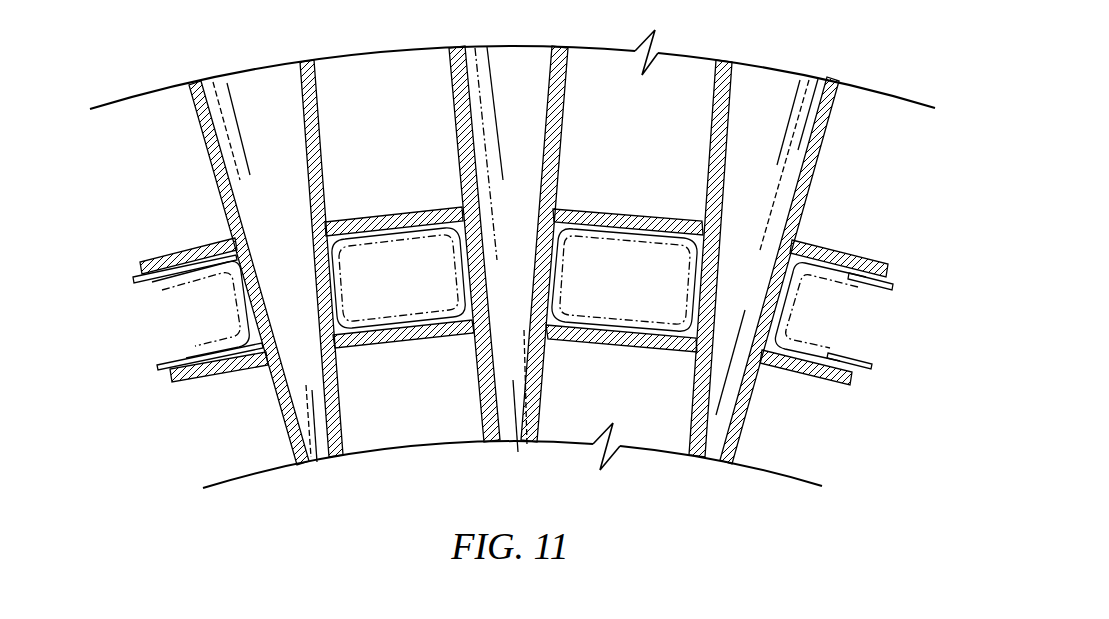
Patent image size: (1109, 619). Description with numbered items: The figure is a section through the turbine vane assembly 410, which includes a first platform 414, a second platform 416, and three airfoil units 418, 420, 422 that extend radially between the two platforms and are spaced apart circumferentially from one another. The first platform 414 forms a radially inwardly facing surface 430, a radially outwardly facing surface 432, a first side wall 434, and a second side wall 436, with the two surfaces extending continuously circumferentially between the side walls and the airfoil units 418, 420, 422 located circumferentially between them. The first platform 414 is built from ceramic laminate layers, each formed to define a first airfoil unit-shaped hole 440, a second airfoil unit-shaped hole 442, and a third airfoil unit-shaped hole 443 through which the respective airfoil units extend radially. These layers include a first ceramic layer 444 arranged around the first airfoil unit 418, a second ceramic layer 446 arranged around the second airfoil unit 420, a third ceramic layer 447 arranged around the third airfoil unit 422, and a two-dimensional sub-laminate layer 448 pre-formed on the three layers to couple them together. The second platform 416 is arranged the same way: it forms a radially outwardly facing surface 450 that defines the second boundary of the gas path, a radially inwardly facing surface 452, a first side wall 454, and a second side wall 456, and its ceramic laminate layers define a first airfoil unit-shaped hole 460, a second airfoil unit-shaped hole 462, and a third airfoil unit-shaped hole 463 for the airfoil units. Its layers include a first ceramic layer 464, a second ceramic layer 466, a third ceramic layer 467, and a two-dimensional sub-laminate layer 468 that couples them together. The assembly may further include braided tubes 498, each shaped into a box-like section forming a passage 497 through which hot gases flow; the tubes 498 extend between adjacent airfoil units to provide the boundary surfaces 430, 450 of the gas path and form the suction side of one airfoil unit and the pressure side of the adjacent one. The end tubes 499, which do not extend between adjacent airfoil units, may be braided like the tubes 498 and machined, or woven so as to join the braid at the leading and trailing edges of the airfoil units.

The turbine vane assembly 410 is at (893, 62).
The first platform 414 is at (890, 185).
The second platform 416 is at (824, 422).
The first airfoil unit 418 is at (791, 290).
The second airfoil unit 420 is at (563, 263).
The third airfoil unit 422 is at (233, 326).
The radially inwardly facing surface 430 is at (863, 281).
The radially outwardly facing surface 432 is at (878, 264).
The first side wall 434 is at (890, 272).
The second side wall 436 is at (136, 275).
The first airfoil unit-shaped hole 440 is at (765, 230).
The second airfoil unit-shaped hole 442 is at (485, 198).
The third airfoil unit-shaped hole 443 is at (262, 238).
The first ceramic layer 444 is at (657, 242).
The second ceramic layer 446 is at (441, 242).
The third ceramic layer 447 is at (368, 242).
The 2D sub-laminate layer 448 is at (585, 205).
The radially outwardly facing surface 450 is at (829, 360).
The radially inwardly facing surface 452 is at (824, 384).
The first side wall 454 is at (860, 386).
The second side wall 456 is at (166, 382).
The first airfoil unit-shaped hole 460 is at (740, 352).
The second airfoil unit-shaped hole 462 is at (498, 337).
The third airfoil unit-shaped hole 463 is at (284, 337).
The first ceramic layer 464 is at (656, 320).
The second ceramic layer 466 is at (450, 318).
The third ceramic layer 467 is at (373, 322).
The 2D sub-laminate layer 468 is at (571, 346).
The passage 497 is at (379, 303).
The braided tubes 498 is at (404, 243).
The end tubes 499 is at (199, 280).